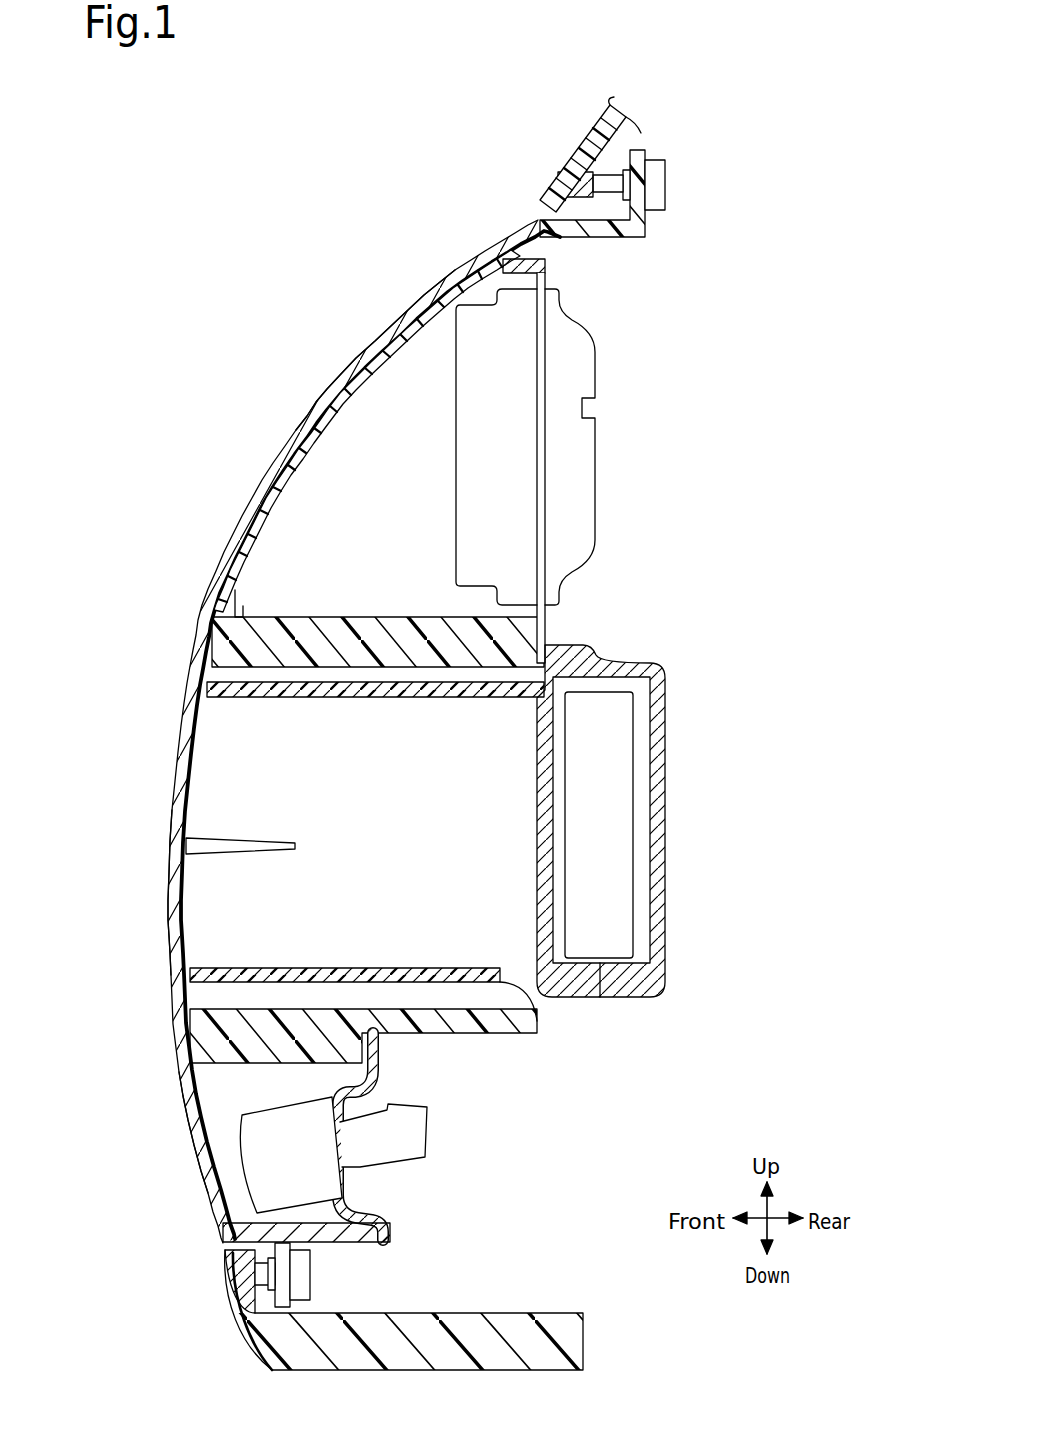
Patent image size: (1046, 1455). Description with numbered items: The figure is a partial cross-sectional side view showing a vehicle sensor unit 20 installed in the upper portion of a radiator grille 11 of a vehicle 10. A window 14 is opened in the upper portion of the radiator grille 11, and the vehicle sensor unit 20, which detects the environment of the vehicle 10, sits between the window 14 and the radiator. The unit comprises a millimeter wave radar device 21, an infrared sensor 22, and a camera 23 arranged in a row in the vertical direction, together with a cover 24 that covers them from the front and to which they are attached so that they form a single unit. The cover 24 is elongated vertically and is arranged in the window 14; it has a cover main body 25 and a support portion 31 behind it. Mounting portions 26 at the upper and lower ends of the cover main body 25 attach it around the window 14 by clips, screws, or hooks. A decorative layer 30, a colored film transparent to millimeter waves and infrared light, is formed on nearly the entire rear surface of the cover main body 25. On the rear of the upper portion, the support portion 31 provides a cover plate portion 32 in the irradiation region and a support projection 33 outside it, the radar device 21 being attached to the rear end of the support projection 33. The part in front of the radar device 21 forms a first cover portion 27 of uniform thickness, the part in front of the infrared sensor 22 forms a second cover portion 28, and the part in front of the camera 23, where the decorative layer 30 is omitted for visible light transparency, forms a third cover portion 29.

The vehicle 10 is at (415, 738).
The radiator grille 11 is at (598, 131).
The window 14 is at (543, 218).
The vehicle sensor unit 20 is at (333, 309).
The millimeter wave radar device 21 is at (588, 470).
The infrared sensor 22 is at (622, 855).
The camera 23 is at (300, 1110).
The cover 24 is at (306, 731).
The cover main body 25 is at (188, 718).
The mounting portions 26 is at (640, 187).
The first cover portion 27 is at (300, 424).
The second cover portion 28 is at (178, 902).
The third cover portion 29 is at (194, 1165).
The decorative layer 30 is at (195, 742).
The support portion 31 is at (363, 662).
The cover plate portion 32 is at (308, 452).
The support projection 33 is at (527, 262).